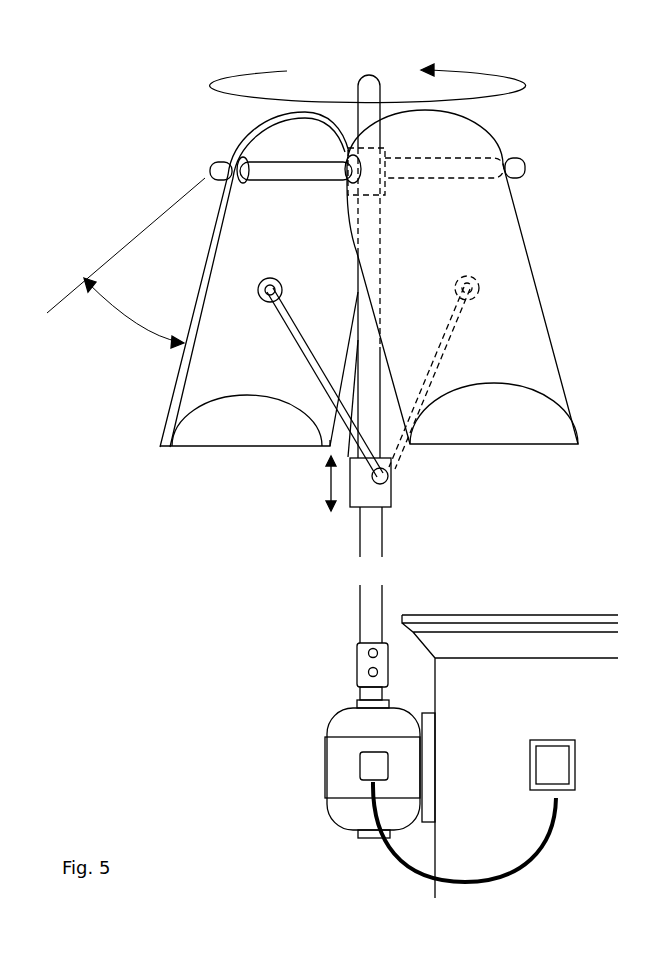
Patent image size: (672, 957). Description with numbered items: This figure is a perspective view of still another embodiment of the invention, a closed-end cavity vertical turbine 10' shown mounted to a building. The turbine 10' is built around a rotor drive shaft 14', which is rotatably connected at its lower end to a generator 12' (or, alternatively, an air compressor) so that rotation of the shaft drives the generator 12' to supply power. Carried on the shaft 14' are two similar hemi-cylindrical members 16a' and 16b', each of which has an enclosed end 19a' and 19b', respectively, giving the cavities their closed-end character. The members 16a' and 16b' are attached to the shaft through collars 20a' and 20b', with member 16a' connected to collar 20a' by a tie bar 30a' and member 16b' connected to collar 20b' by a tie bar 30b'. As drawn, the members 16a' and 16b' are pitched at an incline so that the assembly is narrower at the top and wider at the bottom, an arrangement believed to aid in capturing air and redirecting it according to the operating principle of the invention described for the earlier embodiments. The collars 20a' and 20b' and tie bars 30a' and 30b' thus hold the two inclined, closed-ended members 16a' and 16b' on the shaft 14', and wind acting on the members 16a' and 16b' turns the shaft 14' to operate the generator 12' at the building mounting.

The closed-end cavity vertical turbine 10' is at (296, 343).
The generator 12' is at (398, 756).
The rotor drive shaft 14' is at (305, 480).
The hemi-cylindrical member 16a' is at (491, 277).
The hemi-cylindrical member 16b' is at (202, 284).
The enclosed end 19a' is at (524, 458).
The enclosed end 19b' is at (205, 459).
The collar 20a' is at (437, 516).
The collar 20b' is at (488, 228).
The tie bar 30a' is at (344, 433).
The tie bar 30b' is at (295, 132).